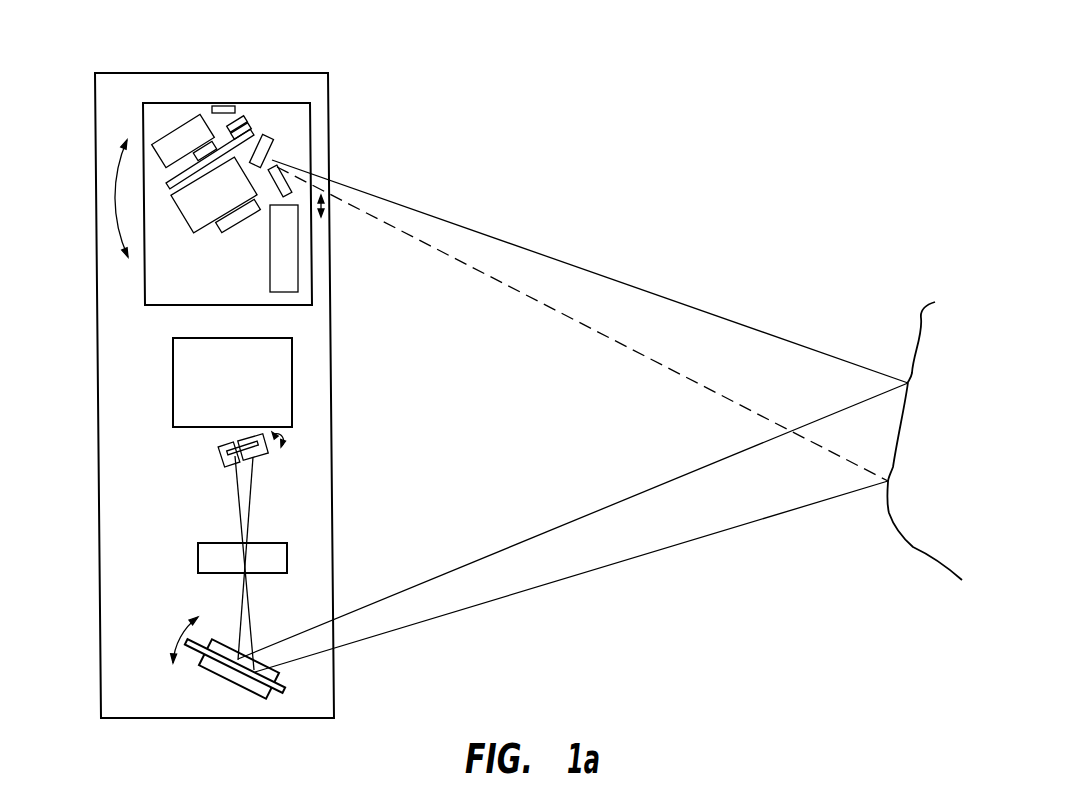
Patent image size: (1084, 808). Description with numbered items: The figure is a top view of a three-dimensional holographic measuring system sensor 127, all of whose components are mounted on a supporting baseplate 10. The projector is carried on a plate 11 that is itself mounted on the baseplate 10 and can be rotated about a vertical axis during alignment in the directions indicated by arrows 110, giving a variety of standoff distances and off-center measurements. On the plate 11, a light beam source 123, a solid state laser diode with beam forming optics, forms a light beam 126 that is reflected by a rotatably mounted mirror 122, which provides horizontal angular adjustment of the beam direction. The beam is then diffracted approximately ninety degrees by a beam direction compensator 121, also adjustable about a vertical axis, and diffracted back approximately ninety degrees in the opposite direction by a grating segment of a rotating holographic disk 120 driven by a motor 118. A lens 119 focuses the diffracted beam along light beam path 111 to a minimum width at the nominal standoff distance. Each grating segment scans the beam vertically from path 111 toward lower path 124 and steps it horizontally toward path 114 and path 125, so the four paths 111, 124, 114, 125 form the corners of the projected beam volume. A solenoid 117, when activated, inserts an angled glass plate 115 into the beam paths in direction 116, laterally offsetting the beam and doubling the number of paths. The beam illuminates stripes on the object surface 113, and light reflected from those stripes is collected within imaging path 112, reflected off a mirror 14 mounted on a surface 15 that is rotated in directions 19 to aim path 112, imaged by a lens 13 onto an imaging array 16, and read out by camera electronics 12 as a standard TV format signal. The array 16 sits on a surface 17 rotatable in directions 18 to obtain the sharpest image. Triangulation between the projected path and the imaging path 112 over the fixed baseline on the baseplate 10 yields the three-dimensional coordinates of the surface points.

The baseplate 10 is at (330, 340).
The plate 11 is at (310, 108).
The camera electronics 12 is at (292, 380).
The lens 13 is at (262, 543).
The mirror 14 is at (282, 707).
The surface 15 is at (226, 690).
The imaging array 16 is at (230, 437).
The surface 17 is at (255, 452).
The directions 18 is at (287, 437).
The directions 19 is at (250, 696).
The arrows 110 is at (211, 199).
The light beam path 111 is at (590, 271).
The imaging path 112 is at (502, 572).
The object surface 113 is at (922, 322).
The light beam path 114 is at (582, 324).
The glass plate 115 is at (282, 165).
The direction 116 is at (325, 208).
The solenoid 117 is at (300, 268).
The motor 118 is at (205, 226).
The lens 119 is at (270, 137).
The rotating disk 120 is at (167, 184).
The beam direction compensator 121 is at (245, 113).
The mirror 122 is at (223, 106).
The light beam source 123 is at (165, 135).
The light path 124 is at (550, 255).
The light path 125 is at (635, 348).
The light beam 126 is at (212, 115).
The sensor 127 is at (206, 395).